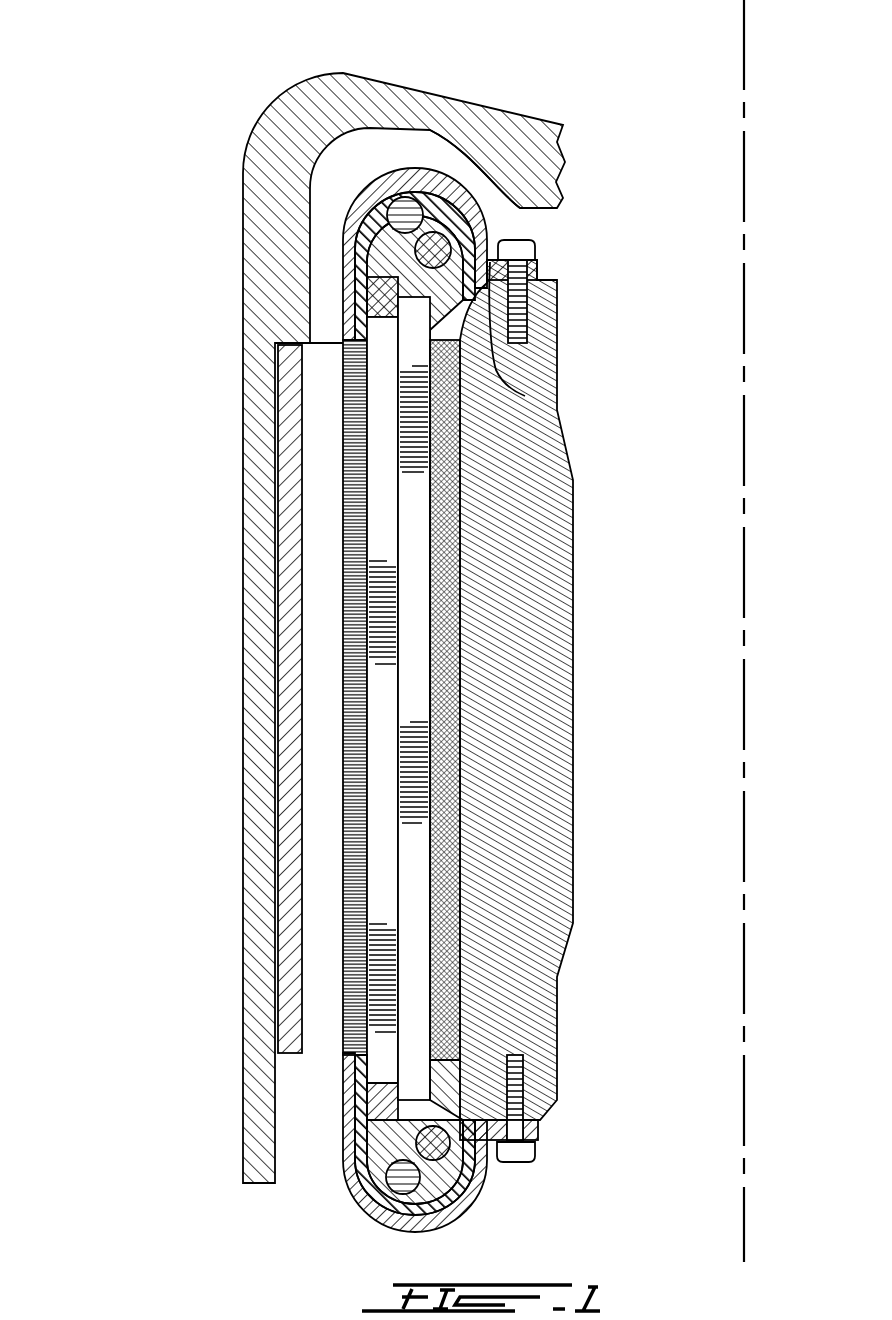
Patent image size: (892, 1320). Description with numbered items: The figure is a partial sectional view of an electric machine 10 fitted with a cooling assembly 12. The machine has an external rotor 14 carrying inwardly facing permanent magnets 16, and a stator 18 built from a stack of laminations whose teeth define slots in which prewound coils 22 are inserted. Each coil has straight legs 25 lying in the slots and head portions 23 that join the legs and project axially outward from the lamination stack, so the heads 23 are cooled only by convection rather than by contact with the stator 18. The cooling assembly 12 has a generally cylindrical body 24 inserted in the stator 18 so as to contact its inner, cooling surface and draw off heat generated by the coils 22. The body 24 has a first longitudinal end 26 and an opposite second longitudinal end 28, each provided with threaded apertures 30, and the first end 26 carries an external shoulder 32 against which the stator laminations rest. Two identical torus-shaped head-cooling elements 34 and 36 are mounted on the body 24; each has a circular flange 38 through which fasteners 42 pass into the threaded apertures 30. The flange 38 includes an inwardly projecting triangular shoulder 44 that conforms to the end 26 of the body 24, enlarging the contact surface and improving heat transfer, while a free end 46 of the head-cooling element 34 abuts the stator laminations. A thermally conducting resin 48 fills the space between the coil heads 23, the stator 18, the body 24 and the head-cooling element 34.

The electric machine 10 is at (183, 187).
The cooling assembly 12 is at (352, 185).
The external rotor 14 is at (236, 274).
The permanent magnets 16 is at (300, 494).
The stator 18 is at (339, 625).
The coils 22 is at (410, 875).
The head portions 23 is at (452, 200).
The cylindrical body 24 is at (574, 657).
The straight legs 25 is at (415, 515).
The first longitudinal end 26 is at (548, 283).
The second longitudinal end 28 is at (545, 1121).
The threaded apertures 30 is at (526, 336).
The external shoulder 32 is at (500, 212).
The head-cooling element 34 is at (405, 196).
The head-cooling element 36 is at (456, 1216).
The circular flange 38 is at (492, 262).
The fasteners 42 is at (525, 252).
The triangular shoulder 44 is at (525, 396).
The free end 46 is at (341, 341).
The thermally conducting resin 48 is at (380, 192).